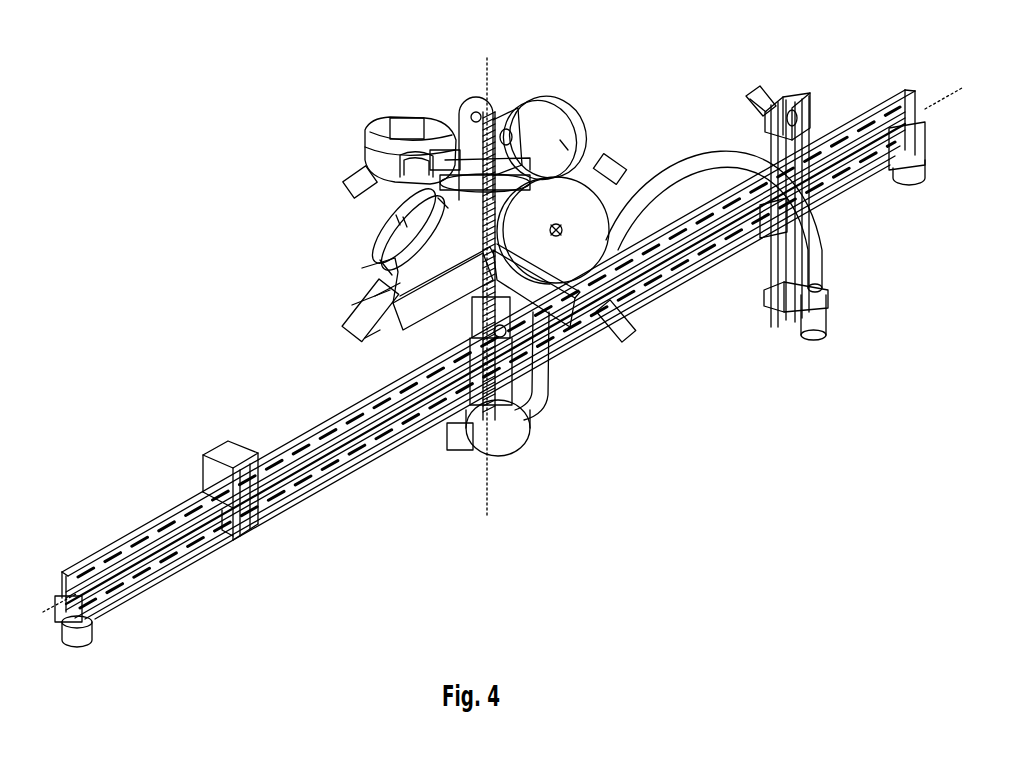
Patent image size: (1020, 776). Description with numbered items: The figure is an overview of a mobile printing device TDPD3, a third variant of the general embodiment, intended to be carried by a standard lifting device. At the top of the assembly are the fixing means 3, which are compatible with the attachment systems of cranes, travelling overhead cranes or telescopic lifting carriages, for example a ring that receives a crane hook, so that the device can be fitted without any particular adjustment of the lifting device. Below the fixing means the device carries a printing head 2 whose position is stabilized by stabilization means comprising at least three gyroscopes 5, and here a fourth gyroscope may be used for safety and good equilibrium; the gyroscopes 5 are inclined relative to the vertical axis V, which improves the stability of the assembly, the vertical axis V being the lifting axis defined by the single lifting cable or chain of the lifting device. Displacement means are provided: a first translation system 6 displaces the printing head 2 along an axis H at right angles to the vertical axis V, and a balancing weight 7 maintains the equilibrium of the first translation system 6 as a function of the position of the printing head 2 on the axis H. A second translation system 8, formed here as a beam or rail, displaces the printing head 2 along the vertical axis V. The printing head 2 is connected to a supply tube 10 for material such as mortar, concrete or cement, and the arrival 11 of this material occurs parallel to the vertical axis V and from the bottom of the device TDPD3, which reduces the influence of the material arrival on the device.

The printing head 2 is at (826, 318).
The fixing means 3 is at (487, 114).
The gyroscopes 5 is at (568, 121).
The first translation system 6 is at (325, 475).
The balancing weight 7 is at (225, 446).
The second translation system 8 is at (806, 103).
The supply tube 10 is at (688, 165).
The arrival of material 11 is at (457, 468).
The axis H is at (657, 268).
The vertical axis V is at (500, 489).
The mobile printing device TDPD3 is at (204, 142).